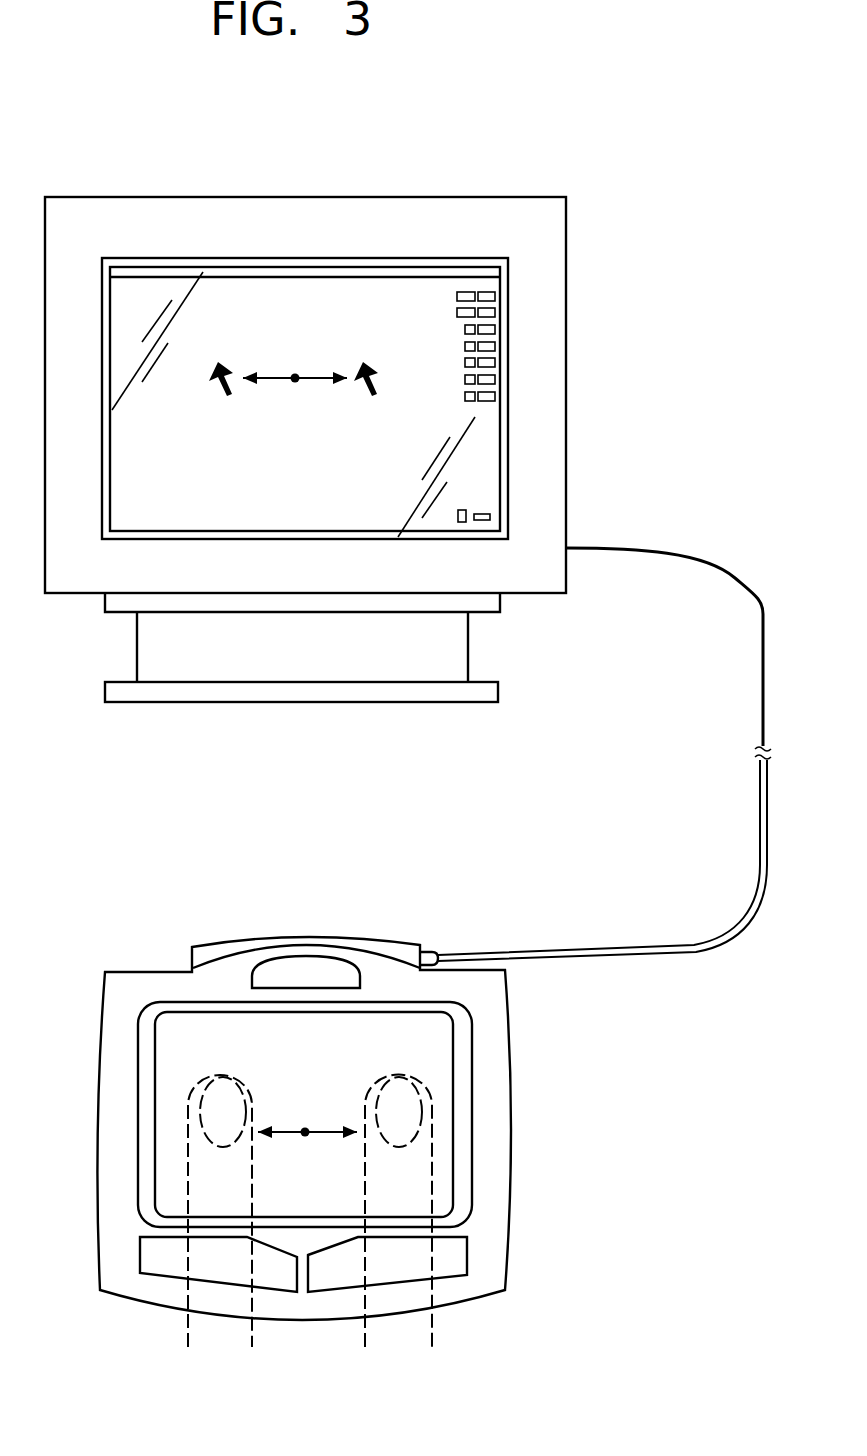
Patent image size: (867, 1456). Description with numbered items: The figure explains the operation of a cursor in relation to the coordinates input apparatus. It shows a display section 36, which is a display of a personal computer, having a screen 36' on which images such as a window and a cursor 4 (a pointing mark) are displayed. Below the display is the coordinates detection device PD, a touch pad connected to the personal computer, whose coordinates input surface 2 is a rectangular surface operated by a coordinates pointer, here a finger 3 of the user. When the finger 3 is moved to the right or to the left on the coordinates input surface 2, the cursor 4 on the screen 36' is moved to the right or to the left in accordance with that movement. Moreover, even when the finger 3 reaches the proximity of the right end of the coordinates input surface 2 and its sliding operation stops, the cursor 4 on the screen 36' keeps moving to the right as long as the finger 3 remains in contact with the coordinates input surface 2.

The display section 36 is at (408, 564).
The screen 36' is at (401, 404).
The cursor 4 is at (212, 350).
The coordinates detection device PD is at (358, 920).
The coordinates input surface 2 is at (442, 1057).
The finger 3 is at (187, 1188).